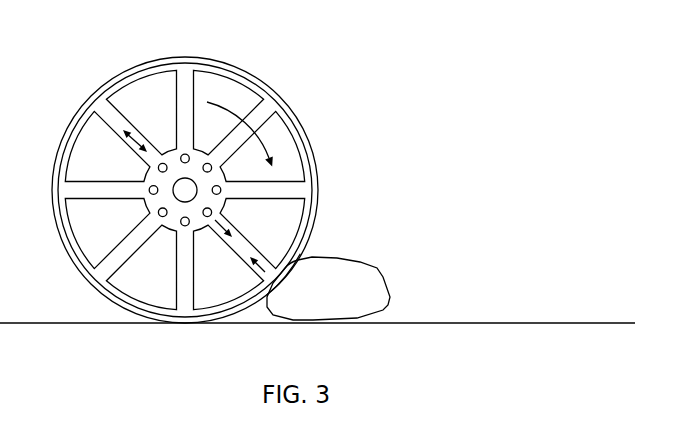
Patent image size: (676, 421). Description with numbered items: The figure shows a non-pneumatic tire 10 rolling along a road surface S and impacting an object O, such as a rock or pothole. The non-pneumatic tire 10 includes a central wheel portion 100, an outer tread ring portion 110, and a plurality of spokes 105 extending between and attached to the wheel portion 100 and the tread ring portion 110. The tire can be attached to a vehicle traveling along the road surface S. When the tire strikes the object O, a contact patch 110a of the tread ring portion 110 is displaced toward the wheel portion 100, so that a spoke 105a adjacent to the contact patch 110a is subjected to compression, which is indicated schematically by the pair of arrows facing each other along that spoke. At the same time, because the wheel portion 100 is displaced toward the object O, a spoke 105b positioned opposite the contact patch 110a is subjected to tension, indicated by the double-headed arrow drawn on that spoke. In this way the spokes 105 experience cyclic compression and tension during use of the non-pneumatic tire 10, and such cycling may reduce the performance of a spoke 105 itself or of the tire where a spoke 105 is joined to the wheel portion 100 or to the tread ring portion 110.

The non-pneumatic tire 10 is at (260, 56).
The wheel portion 100 is at (148, 205).
The spokes 105 is at (78, 193).
The spoke adjacent to the contact patch 105a is at (247, 250).
The spoke oppositely positioned the contact patch 105b is at (115, 116).
The tread ring portion 110 is at (306, 135).
The contact patch 110a is at (290, 254).
The object O is at (380, 270).
The road surface S is at (527, 323).